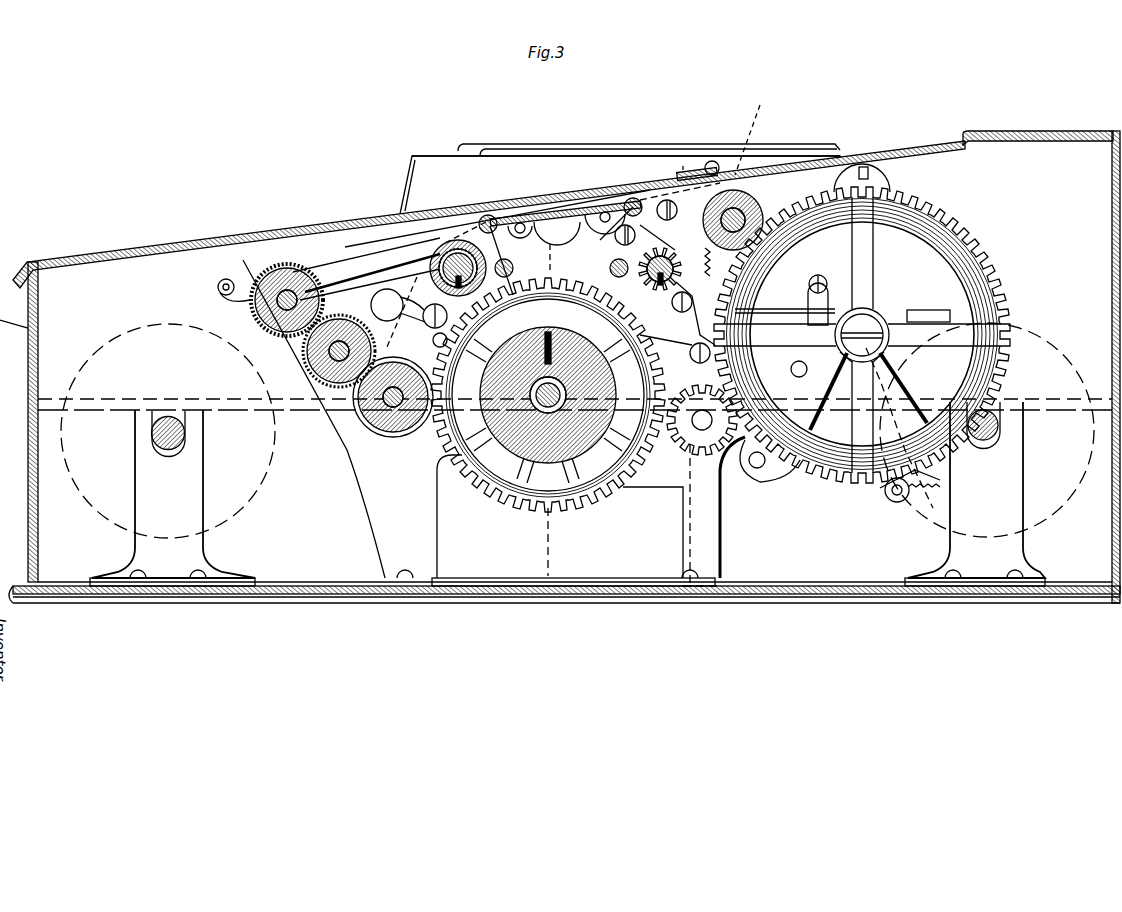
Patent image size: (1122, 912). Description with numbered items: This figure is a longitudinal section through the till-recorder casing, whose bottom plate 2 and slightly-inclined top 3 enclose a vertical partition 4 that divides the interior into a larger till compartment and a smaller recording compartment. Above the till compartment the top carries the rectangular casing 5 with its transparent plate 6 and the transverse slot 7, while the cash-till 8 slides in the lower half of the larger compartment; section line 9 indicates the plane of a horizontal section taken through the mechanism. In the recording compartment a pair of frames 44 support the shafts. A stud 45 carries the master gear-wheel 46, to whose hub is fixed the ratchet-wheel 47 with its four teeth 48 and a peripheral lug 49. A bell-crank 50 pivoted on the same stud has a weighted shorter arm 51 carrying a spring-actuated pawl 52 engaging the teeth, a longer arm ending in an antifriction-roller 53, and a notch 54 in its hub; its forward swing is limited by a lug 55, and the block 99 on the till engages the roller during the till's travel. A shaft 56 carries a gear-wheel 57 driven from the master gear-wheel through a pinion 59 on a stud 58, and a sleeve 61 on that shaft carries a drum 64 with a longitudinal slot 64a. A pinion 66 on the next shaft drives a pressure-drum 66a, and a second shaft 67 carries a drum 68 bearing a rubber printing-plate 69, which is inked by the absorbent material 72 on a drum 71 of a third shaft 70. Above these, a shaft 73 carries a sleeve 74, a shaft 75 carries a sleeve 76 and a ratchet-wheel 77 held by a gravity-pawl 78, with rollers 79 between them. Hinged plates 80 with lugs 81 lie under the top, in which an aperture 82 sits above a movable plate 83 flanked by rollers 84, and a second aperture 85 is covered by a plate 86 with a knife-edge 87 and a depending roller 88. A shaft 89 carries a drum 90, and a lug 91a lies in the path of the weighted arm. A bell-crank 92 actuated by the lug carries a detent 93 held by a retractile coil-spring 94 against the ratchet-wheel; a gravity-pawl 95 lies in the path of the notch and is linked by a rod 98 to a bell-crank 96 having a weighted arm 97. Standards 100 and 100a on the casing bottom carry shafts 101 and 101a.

The bottom plate 2 is at (403, 598).
The top 3 is at (228, 240).
The partition 4 is at (574, 367).
The rectangular casing 5 is at (410, 172).
The transparent plate 6 is at (522, 147).
The slot 7 is at (547, 542).
The cash-till 8 is at (314, 419).
The yoke 9 is at (540, 251).
The frames 44 is at (432, 477).
The stud 45 is at (872, 320).
The master gear-wheel 46 is at (1005, 300).
The ratchet-wheel 47 is at (940, 262).
The teeth 48 is at (968, 246).
The lug 49 is at (1012, 345).
The bell-crank 50 is at (859, 391).
The shorter arm 51 is at (862, 335).
The spring-actuated pawl 52 is at (898, 502).
The antifriction-roller 53 is at (758, 470).
The notch 54 is at (858, 312).
The lug 55 is at (792, 369).
The shaft 56 is at (546, 412).
The gear-wheel 57 is at (480, 482).
The stud 58 is at (705, 445).
The pinion 59 is at (706, 462).
The sleeve 61 is at (550, 412).
The drum 64 is at (600, 385).
The slot 64a is at (556, 335).
The pinion 66 is at (390, 405).
The pressure-drum 66a is at (392, 422).
The second shaft 67 is at (330, 365).
The drum 68 is at (338, 372).
The printing-plate 69 is at (298, 352).
The third shaft 70 is at (285, 300).
The drum 71 is at (262, 284).
The absorbent material 72 is at (223, 298).
The shaft 73 is at (440, 264).
The sleeve 74 is at (442, 270).
The shaft 75 is at (672, 254).
The sleeve 76 is at (643, 279).
The ratchet-wheel 77 is at (646, 257).
The gravity-pawl 78 is at (636, 235).
The rollers 79 is at (513, 267).
The plates 80 is at (372, 279).
The lugs 81 is at (380, 236).
The aperture 82 is at (516, 210).
The movable plate 83 is at (568, 206).
The rollers 84 is at (487, 216).
The aperture 85 is at (713, 161).
The plate 86 is at (683, 166).
The knife-edge 87 is at (725, 170).
The roller 88 is at (678, 210).
The shaft 89 is at (760, 210).
The drum 90 is at (745, 202).
The lug 91a is at (868, 173).
The bell-crank 92 is at (690, 346).
The detent 93 is at (693, 313).
The retractile coil-spring 94 is at (699, 262).
The gravity-pawl 95 is at (824, 278).
The bell-crank 96 is at (433, 339).
The weighted arm 97 is at (371, 306).
The rod 98 is at (526, 340).
The block 99 is at (700, 440).
The standard 100 is at (987, 454).
The standard 100a is at (168, 455).
The shaft 101 is at (1000, 425).
The shaft 101a is at (160, 433).